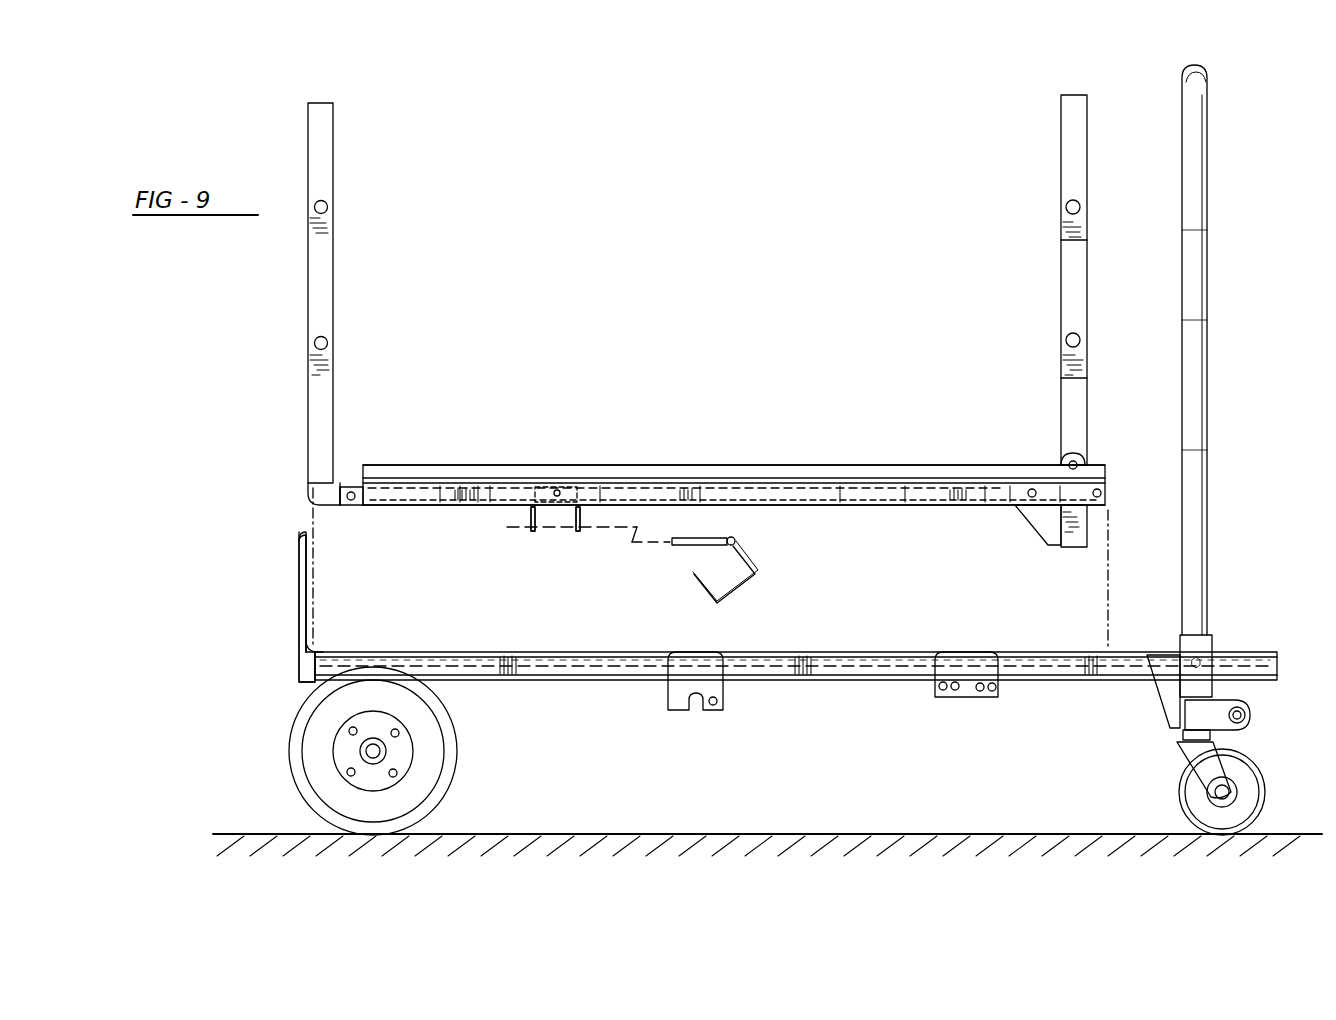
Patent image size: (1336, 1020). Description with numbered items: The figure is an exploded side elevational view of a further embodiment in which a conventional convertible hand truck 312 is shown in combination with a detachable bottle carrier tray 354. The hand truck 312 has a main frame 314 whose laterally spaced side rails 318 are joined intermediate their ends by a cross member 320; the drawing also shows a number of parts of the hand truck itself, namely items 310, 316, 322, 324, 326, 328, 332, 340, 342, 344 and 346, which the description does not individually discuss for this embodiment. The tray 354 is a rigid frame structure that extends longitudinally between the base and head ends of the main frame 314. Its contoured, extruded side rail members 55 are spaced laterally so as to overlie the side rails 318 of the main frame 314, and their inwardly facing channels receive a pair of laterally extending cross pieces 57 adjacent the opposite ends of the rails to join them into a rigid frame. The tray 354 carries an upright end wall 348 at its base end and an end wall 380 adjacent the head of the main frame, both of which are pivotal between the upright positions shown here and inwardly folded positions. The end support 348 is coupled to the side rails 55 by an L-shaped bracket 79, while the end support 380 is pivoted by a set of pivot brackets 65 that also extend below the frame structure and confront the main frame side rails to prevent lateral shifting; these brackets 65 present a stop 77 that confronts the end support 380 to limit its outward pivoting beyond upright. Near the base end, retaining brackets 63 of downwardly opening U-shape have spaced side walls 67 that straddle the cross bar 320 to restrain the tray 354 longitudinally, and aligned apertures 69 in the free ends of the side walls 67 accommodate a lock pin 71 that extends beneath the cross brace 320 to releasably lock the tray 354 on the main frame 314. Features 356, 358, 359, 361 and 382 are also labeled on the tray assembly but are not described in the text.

The handle assembly 310 is at (1238, 125).
The convertible hand truck 312 is at (1213, 451).
The main frame 314 is at (867, 685).
The handle upright 316 is at (1215, 318).
The side rails 318 is at (1060, 670).
The cross member 320 is at (575, 665).
The handle sleeve 322 is at (1213, 638).
The rear wheel 324 is at (289, 742).
The wheel hub 326 is at (363, 751).
The end plate 328 is at (297, 668).
The corner bracket 332 is at (322, 647).
The handle grip 340 is at (1207, 235).
The caster mounting bracket 342 is at (1170, 692).
The caster wheel 344 is at (1257, 779).
The latch bracket 346 is at (724, 713).
The upright end wall 348 is at (310, 393).
The detachable bottle carrier tray 354 is at (1055, 117).
The rail lower edge 356 is at (905, 505).
The rail upper edge 358 is at (703, 468).
The hinge block 359 is at (302, 502).
The pivot hinge 361 is at (1101, 460).
The end wall 380 is at (1058, 282).
The post lower section 382 is at (1065, 373).
The side rail members 55 is at (935, 490).
The cross pieces 57 is at (478, 490).
The retaining brackets 63 is at (588, 511).
The pivot brackets 65 is at (316, 490).
The side walls 67 is at (525, 505).
The apertures 69 is at (533, 530).
The lock pin 71 is at (690, 546).
The stop 77 is at (1072, 548).
The L-shaped bracket 79 is at (357, 487).